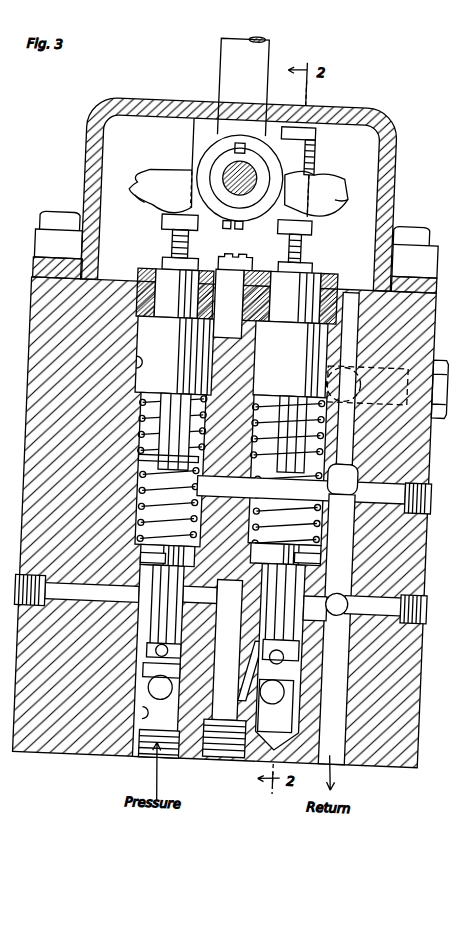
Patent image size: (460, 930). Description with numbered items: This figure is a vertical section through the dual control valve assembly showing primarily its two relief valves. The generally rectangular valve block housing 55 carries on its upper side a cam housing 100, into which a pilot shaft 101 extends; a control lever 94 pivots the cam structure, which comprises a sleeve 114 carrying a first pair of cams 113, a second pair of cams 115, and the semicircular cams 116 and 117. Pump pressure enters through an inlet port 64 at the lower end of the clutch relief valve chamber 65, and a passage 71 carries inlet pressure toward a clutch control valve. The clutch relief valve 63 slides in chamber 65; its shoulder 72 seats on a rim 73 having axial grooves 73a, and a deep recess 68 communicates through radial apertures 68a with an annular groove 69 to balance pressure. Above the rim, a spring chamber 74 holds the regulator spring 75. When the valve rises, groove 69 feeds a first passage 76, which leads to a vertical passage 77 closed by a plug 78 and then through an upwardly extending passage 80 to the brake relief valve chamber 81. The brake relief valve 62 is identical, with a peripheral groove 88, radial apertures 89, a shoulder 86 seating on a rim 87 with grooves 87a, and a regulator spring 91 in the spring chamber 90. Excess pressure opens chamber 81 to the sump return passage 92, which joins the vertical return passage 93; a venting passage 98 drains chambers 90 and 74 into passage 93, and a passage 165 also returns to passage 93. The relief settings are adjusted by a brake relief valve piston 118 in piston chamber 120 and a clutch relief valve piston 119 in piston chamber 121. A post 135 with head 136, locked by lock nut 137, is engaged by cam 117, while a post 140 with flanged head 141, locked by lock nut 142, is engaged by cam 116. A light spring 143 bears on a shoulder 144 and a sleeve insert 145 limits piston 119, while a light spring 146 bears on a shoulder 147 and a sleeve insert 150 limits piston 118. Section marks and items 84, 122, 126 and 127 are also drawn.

The valve block housing 55 is at (28, 303).
The brake relief valve 62 is at (301, 584).
The clutch relief valve 63 is at (153, 599).
The inlet port 64 is at (157, 748).
The clutch relief valve chamber 65 is at (150, 716).
The cylindrical recess 68 is at (153, 660).
The radial apertures 68a is at (149, 673).
The annular groove 69 is at (153, 653).
The passage 71 is at (152, 693).
The shoulder 72 is at (141, 559).
The rim 73 is at (139, 567).
The axial grooves 73a is at (139, 544).
The spring chamber 74 is at (138, 484).
The relief valve regulator spring 75 is at (134, 444).
The first passage 76 is at (194, 606).
The vertical passage 77 is at (238, 635).
The plug 78 is at (238, 760).
The upwardly extending passage 80 is at (225, 660).
The brake relief valve chamber 81 is at (274, 726).
The passage 84 is at (255, 694).
The shoulder 86 is at (266, 552).
The rim 87 is at (270, 558).
The axial grooves 87a is at (258, 539).
The peripheral groove 88 is at (291, 658).
The radial apertures 89 is at (285, 688).
The brake regulator spring chamber 90 is at (336, 529).
The brake relief valve regulator spring 91 is at (340, 440).
The sump return passage 92 is at (332, 611).
The vertical return passage 93 is at (352, 695).
The control lever 94 is at (231, 39).
The venting passage 98 is at (215, 501).
The cam housing 100 is at (81, 127).
The pilot shaft 101 is at (193, 226).
The first pair of cams 113 is at (127, 199).
The sleeve 114 is at (213, 140).
The second pair of cams 115 is at (287, 184).
The cam 116 is at (136, 173).
The cam 117 is at (322, 196).
The brake relief valve piston 118 is at (258, 364).
The clutch relief valve piston 119 is at (142, 352).
The piston chamber 120 is at (343, 341).
The piston chamber 121 is at (132, 366).
The screw 122 is at (300, 145).
The nut 126 is at (294, 117).
The screw shank 127 is at (296, 159).
The post 135 is at (292, 243).
The head 136 is at (306, 222).
The lock nut 137 is at (300, 263).
The post 140 is at (161, 240).
The flanged head 141 is at (151, 221).
The lock nut 142 is at (164, 257).
The light spring 143 is at (173, 411).
The shoulder 144 is at (135, 464).
The sleeve insert 145 is at (155, 271).
The light spring 146 is at (286, 461).
The shoulder 147 is at (338, 471).
The sleeve insert 150 is at (320, 276).
The passage 165 is at (351, 602).